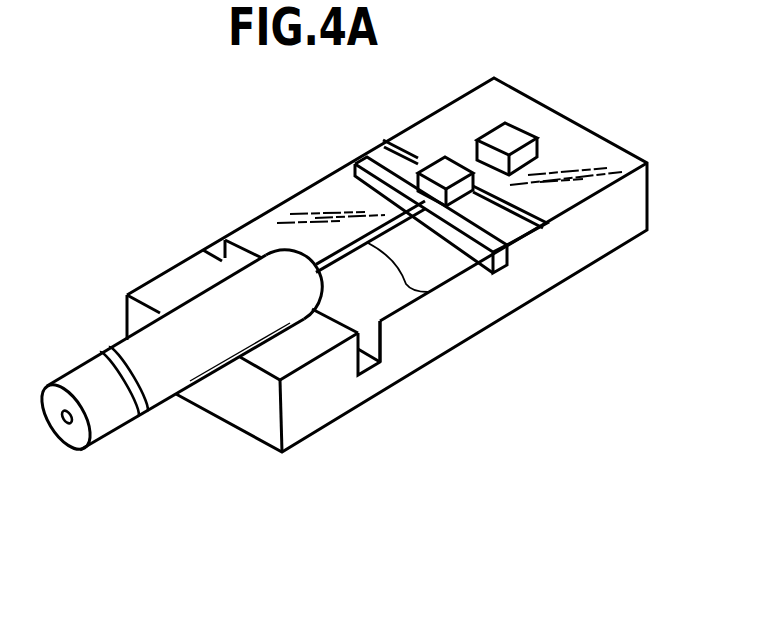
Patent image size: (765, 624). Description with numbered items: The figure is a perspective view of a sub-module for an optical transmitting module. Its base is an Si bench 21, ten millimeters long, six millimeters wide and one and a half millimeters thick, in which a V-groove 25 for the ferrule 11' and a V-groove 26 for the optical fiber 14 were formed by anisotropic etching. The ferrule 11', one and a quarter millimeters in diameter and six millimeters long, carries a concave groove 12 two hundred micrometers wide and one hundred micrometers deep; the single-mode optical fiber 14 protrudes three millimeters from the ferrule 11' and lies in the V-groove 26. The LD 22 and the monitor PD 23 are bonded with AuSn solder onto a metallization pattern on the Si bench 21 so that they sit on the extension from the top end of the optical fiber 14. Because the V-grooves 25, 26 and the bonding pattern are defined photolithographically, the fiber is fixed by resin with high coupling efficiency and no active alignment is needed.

The ferrule 11' is at (177, 324).
The concave groove 12 is at (98, 363).
The optical fiber 14 is at (328, 266).
The Si bench 21 is at (560, 252).
The LD 22 is at (386, 159).
The monitor PD 23 is at (510, 132).
The V-groove 25 is at (218, 377).
The V-groove 26 is at (428, 292).